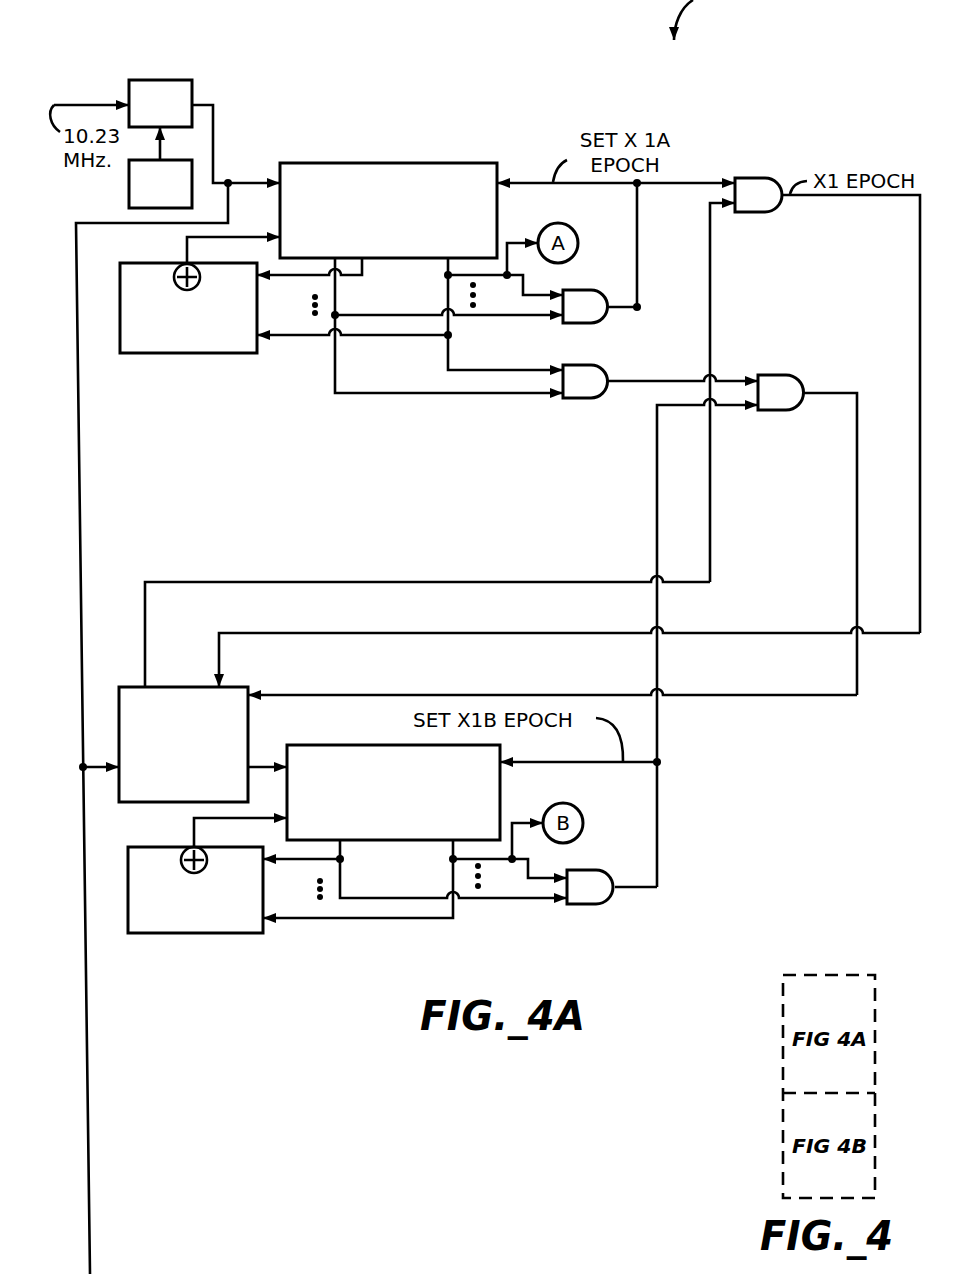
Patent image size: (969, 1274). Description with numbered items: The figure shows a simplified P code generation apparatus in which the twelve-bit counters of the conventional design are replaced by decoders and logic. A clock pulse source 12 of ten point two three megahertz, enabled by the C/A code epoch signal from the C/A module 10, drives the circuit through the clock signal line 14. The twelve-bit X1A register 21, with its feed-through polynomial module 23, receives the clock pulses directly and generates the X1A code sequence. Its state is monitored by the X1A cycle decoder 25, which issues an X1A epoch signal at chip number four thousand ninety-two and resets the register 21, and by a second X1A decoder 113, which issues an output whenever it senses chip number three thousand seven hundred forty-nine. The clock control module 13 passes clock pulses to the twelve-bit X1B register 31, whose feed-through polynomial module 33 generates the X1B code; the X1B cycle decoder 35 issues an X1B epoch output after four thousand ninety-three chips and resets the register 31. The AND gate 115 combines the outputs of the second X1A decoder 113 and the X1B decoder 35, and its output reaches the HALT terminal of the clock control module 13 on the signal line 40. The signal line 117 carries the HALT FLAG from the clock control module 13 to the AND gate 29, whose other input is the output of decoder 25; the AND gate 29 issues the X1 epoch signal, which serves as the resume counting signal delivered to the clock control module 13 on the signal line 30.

The C/A module 10 is at (126, 188).
The clock pulse source 12 is at (193, 93).
The clock control module 13 is at (175, 802).
The clock signal line 14 is at (82, 666).
The X1A register 21 is at (427, 259).
The feed-through polynomial module 23 is at (258, 307).
The X1A cycle decoder 25 is at (579, 290).
The AND gate 29 is at (750, 178).
The signal line 30 is at (413, 633).
The X1B register 31 is at (430, 841).
The feed-through polynomial module 33 is at (263, 887).
The X1B cycle decoder 35 is at (585, 870).
The signal line 40 is at (480, 694).
The second X1A decoder 113 is at (578, 365).
The AND gate 115 is at (775, 375).
The signal line 117 is at (318, 583).